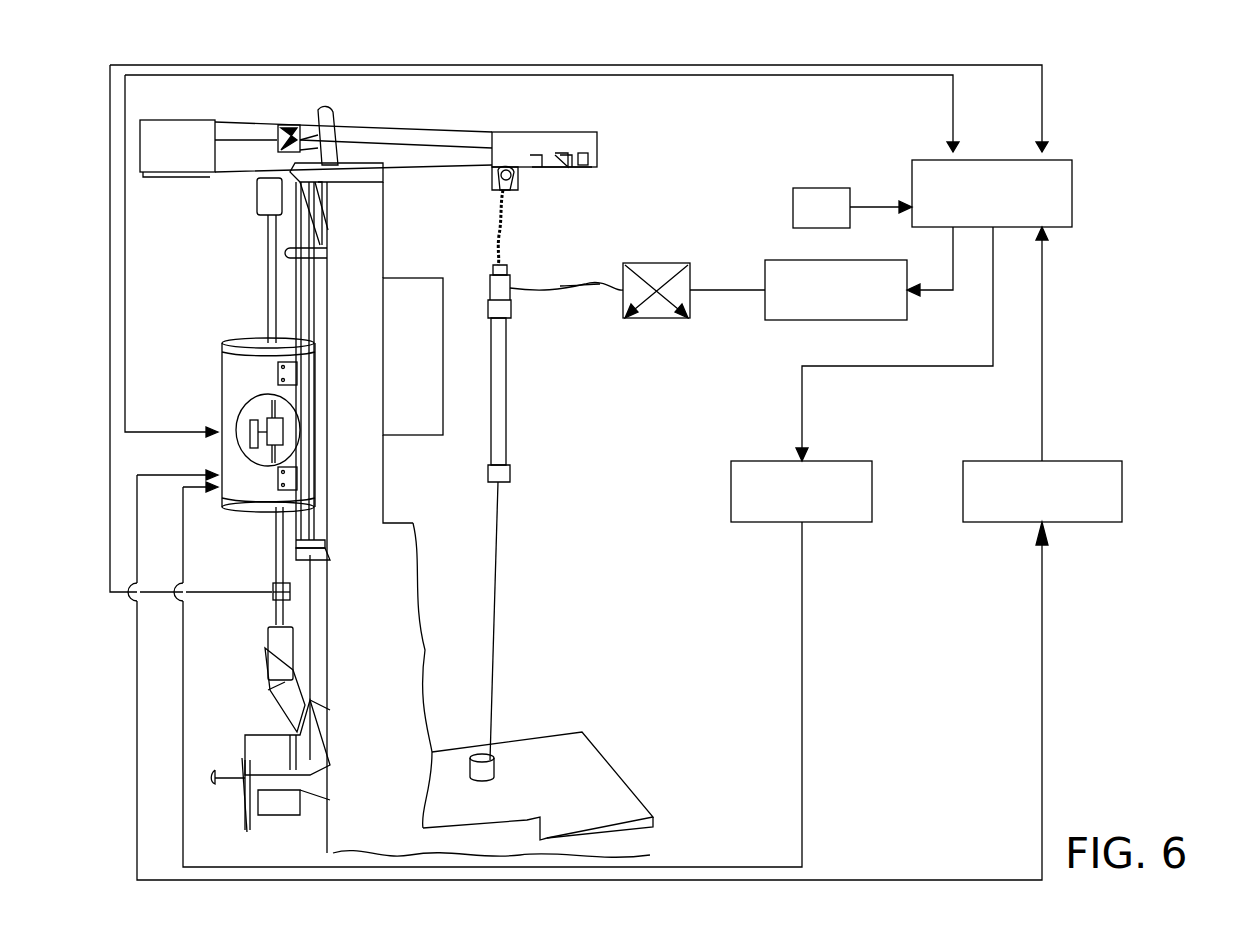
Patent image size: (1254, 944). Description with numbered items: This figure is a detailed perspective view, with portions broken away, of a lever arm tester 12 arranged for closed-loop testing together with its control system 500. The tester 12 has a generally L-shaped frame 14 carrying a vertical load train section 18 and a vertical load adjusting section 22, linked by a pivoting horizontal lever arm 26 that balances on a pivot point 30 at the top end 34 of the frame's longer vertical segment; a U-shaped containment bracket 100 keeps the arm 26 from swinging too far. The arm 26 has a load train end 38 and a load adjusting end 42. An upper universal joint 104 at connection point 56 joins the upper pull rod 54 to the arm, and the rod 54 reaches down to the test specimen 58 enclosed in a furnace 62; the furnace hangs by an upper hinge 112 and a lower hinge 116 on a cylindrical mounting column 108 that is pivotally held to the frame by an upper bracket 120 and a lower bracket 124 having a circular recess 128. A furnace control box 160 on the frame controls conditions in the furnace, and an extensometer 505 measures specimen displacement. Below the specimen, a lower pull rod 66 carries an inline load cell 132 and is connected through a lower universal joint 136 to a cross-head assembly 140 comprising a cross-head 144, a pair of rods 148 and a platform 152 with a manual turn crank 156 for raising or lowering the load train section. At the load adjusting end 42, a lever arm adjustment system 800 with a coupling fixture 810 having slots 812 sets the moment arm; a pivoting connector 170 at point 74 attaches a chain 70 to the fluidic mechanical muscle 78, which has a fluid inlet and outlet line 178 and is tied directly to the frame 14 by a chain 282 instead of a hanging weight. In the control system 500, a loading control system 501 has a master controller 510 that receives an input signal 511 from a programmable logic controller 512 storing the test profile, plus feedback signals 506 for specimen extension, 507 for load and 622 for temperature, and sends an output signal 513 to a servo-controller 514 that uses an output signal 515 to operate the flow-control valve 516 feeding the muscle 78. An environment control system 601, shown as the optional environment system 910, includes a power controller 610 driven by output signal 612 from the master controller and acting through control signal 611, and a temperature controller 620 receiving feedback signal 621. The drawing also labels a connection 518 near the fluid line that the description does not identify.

The lever arm tester 12 is at (515, 130).
The frame 14 is at (385, 475).
The load train section 18 is at (195, 465).
The load adjusting section 22 is at (545, 450).
The lever arm 26 is at (437, 130).
The pivot point 30 is at (285, 124).
The top end 34 is at (365, 205).
The load train end 38 is at (232, 122).
The load adjusting end 42 is at (590, 160).
The upper pull rod 54 is at (268, 268).
The upper pull rod connection point 56 is at (245, 190).
The test specimen 58 is at (267, 428).
The furnace 62 is at (222, 393).
The lower pull rod 66 is at (276, 555).
The upper connector 70 is at (502, 225).
The upper connector connection point 74 is at (592, 182).
The fluidic mechanical muscle 78 is at (506, 398).
The containment bracket 100 is at (335, 112).
The upper universal joint 104 is at (257, 200).
The mounting column 108 is at (296, 306).
The upper hinge 112 is at (278, 381).
The lower hinge 116 is at (278, 478).
The upper bracket 120 is at (345, 253).
The lower bracket 124 is at (276, 583).
The circular recess 128 is at (296, 545).
The inline load cell 132 is at (273, 597).
The lower universal joint 136 is at (275, 641).
The cross-head assembly 140 is at (232, 710).
The cross-head 144 is at (282, 695).
The rods 148 is at (290, 755).
The platform 152 is at (310, 815).
The manual turn crank 156 is at (245, 825).
The furnace control box 160 is at (415, 366).
The pivoting connector 170 is at (498, 185).
The fluid inlet and outlet line 178 is at (542, 290).
The chain 282 is at (494, 520).
The control system 500 is at (770, 377).
The loading control system 501 is at (1105, 124).
The extensometer 505 is at (250, 440).
The feedback input signal 506 is at (952, 112).
The feedback input signal 507 is at (1043, 90).
The master controller 510 is at (1073, 194).
The input signal 511 is at (872, 206).
The programmable logic controller 512 is at (793, 212).
The output signal 513 is at (952, 247).
The servo-controller 514 is at (868, 321).
The output signal 515 is at (722, 291).
The flow-control valve 516 is at (660, 322).
The cable 518 is at (578, 284).
The environment control system 601 is at (773, 690).
The power controller 610 is at (763, 523).
The output control signal 611 is at (802, 662).
The output signal 612 is at (862, 367).
The temperature controller 620 is at (1003, 523).
The feedback signal 621 is at (1042, 748).
The temperature signal 622 is at (1043, 380).
The lever arm adjustment system 800 is at (560, 133).
The coupling fixture 810 is at (597, 142).
The slots 812 is at (560, 155).
The environment system 910 is at (535, 563).